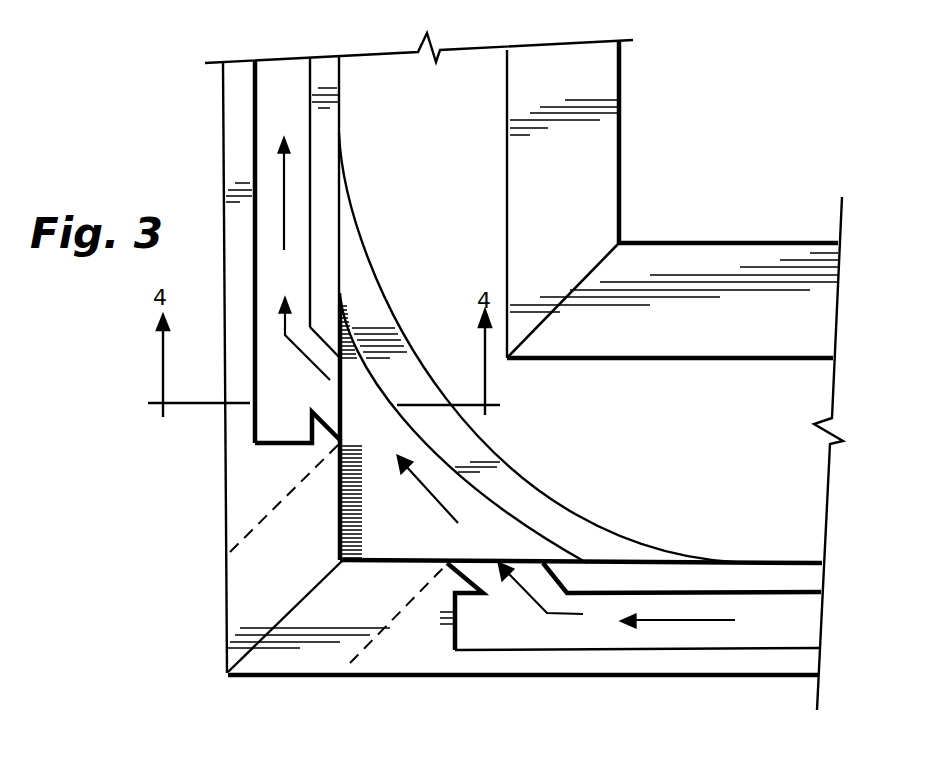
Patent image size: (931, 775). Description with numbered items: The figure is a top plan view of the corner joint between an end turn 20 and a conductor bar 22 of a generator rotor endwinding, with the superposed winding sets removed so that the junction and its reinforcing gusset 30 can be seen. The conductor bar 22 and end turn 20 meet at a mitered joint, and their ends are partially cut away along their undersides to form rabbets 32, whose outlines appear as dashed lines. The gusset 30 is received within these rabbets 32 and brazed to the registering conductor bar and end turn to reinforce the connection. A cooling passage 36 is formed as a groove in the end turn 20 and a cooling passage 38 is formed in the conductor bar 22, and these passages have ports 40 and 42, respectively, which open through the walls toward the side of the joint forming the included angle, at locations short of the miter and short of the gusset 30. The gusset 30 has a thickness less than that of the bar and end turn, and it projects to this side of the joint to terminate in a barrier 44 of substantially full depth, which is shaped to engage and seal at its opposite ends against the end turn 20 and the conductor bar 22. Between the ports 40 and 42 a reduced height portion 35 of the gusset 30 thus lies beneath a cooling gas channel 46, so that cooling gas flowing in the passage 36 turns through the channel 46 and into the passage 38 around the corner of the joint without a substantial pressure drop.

The end turn 20 is at (672, 340).
The conductor bar 22 is at (232, 101).
The gusset 30 is at (388, 547).
The rabbets 32 is at (255, 540).
The reduced height portion 35 is at (440, 535).
The cooling passage 36 is at (757, 615).
The cooling passage 38 is at (265, 164).
The port 40 is at (498, 590).
The port 42 is at (313, 385).
The barrier 44 is at (550, 505).
The cooling gas channel 46 is at (396, 534).